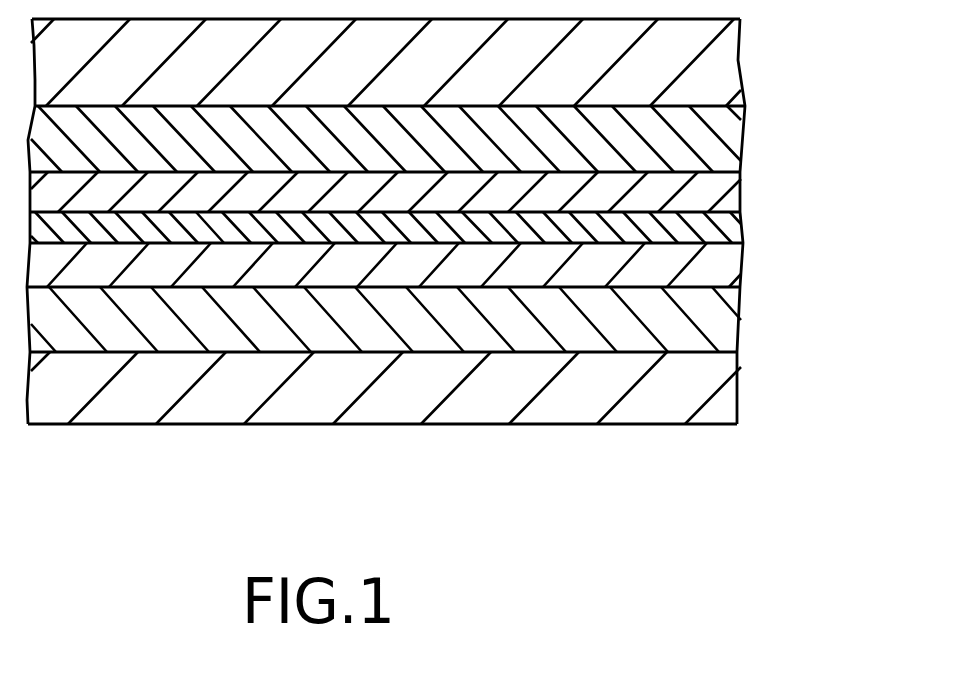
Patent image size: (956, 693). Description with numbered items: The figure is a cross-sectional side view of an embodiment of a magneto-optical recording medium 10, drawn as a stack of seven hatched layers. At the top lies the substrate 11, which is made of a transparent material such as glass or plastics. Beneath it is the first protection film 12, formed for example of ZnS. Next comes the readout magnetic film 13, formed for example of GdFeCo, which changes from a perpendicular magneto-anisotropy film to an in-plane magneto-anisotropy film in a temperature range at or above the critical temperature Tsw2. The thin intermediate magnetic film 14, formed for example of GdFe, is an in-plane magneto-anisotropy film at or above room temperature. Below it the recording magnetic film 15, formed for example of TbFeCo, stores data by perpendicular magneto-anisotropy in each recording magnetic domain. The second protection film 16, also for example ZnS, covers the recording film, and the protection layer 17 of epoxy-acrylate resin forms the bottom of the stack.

The magneto-optical recording medium 10 is at (852, 20).
The substrate 11 is at (665, 71).
The first protection film 12 is at (697, 143).
The readout magnetic film 13 is at (697, 200).
The intermediate magnetic film 14 is at (705, 233).
The recording magnetic film 15 is at (692, 272).
The second protection film 16 is at (687, 328).
The protection layer 17 is at (680, 397).